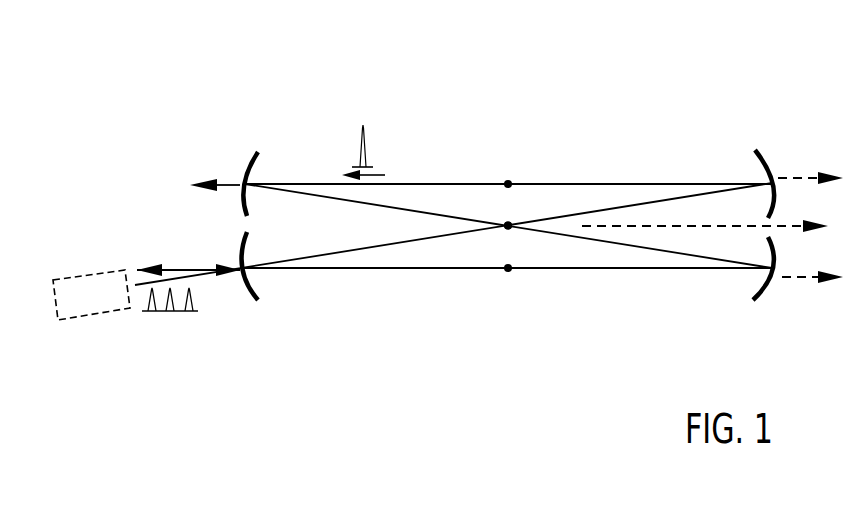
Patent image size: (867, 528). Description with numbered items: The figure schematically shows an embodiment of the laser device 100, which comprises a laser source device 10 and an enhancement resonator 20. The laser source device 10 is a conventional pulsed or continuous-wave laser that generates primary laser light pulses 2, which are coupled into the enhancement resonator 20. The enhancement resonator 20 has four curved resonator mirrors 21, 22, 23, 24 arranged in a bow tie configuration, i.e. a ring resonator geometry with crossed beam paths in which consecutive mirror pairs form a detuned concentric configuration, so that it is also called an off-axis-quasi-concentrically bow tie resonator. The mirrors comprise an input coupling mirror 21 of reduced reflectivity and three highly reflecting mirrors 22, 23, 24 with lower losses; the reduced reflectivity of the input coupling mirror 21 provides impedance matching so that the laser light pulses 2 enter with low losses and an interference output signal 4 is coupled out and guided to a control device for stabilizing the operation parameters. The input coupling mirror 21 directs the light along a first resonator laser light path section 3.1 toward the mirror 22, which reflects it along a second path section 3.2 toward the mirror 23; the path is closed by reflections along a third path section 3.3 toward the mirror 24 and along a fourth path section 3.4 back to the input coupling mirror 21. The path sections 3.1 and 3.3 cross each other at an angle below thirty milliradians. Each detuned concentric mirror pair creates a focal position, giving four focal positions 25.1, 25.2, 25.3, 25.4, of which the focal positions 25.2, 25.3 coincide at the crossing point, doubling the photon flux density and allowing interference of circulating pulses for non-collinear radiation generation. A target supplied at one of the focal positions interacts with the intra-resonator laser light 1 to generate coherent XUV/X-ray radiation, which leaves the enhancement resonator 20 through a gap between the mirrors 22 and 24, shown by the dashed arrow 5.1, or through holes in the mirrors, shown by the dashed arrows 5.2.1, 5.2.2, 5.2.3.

The laser device 100 is at (145, 66).
The laser source device 10 is at (95, 308).
The primary laser light pulses 2 is at (142, 313).
The interference output signal 4 is at (185, 268).
The intra-resonator laser light 1 is at (363, 152).
The enhancement resonator 20 is at (486, 251).
The input coupling mirror 21 is at (252, 295).
The highly reflecting mirror 22 is at (767, 157).
The highly reflecting mirror 23 is at (245, 173).
The highly reflecting mirror 24 is at (765, 292).
The first resonator laser light path section 3.1 is at (322, 255).
The second resonator laser light path section 3.2 is at (423, 183).
The third resonator laser light path section 3.3 is at (330, 198).
The fourth resonator laser light path section 3.4 is at (375, 267).
The focal position 25.1 is at (512, 182).
The focal position 25.2 is at (515, 223).
The focal position 25.3 is at (515, 223).
The focal position 25.4 is at (552, 293).
The coherent radiation output through gap 5.1 is at (705, 213).
The coherent radiation output through mirror hole 5.2.1 is at (810, 165).
The coherent radiation output through mirror hole 5.2.2 is at (186, 184).
The coherent radiation output through mirror hole 5.2.3 is at (812, 263).